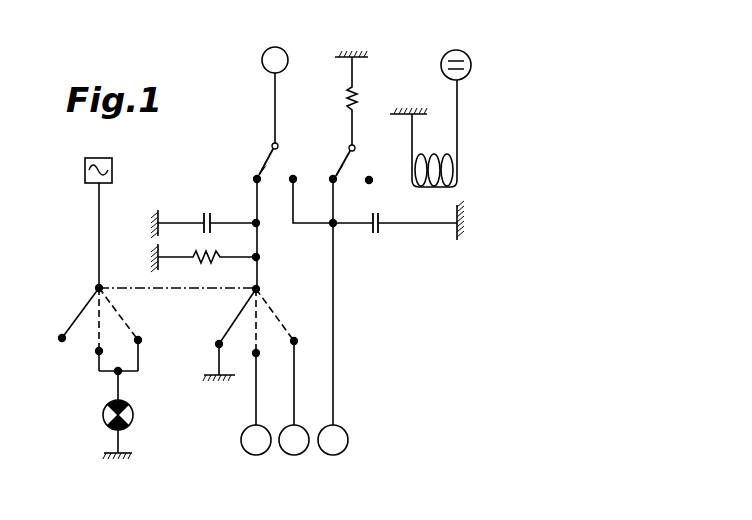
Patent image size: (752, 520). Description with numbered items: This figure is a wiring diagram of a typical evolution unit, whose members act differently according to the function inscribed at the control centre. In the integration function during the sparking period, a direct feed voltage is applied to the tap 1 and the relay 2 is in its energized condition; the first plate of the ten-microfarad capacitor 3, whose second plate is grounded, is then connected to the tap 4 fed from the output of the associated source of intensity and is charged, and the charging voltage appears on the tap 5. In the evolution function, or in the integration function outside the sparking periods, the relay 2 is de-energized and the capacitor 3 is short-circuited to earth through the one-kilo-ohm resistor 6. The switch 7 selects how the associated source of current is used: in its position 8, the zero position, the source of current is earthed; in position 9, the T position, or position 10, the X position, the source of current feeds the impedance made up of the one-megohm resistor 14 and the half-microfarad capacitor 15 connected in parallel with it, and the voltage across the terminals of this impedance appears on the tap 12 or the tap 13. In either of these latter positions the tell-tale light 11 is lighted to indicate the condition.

The tap 1 is at (458, 50).
The relay 2 is at (453, 163).
The capacitor 3 is at (379, 234).
The tap 4 is at (263, 57).
The tap 5 is at (343, 450).
The resistor 6 is at (344, 97).
The switch 7 is at (195, 291).
The position 8 is at (84, 304).
The position 9 is at (97, 336).
The position 10 is at (126, 327).
The tell-tale light 11 is at (103, 425).
The tap 12 is at (256, 455).
The tap 13 is at (294, 455).
The resistor 14 is at (208, 262).
The capacitor 15 is at (214, 213).